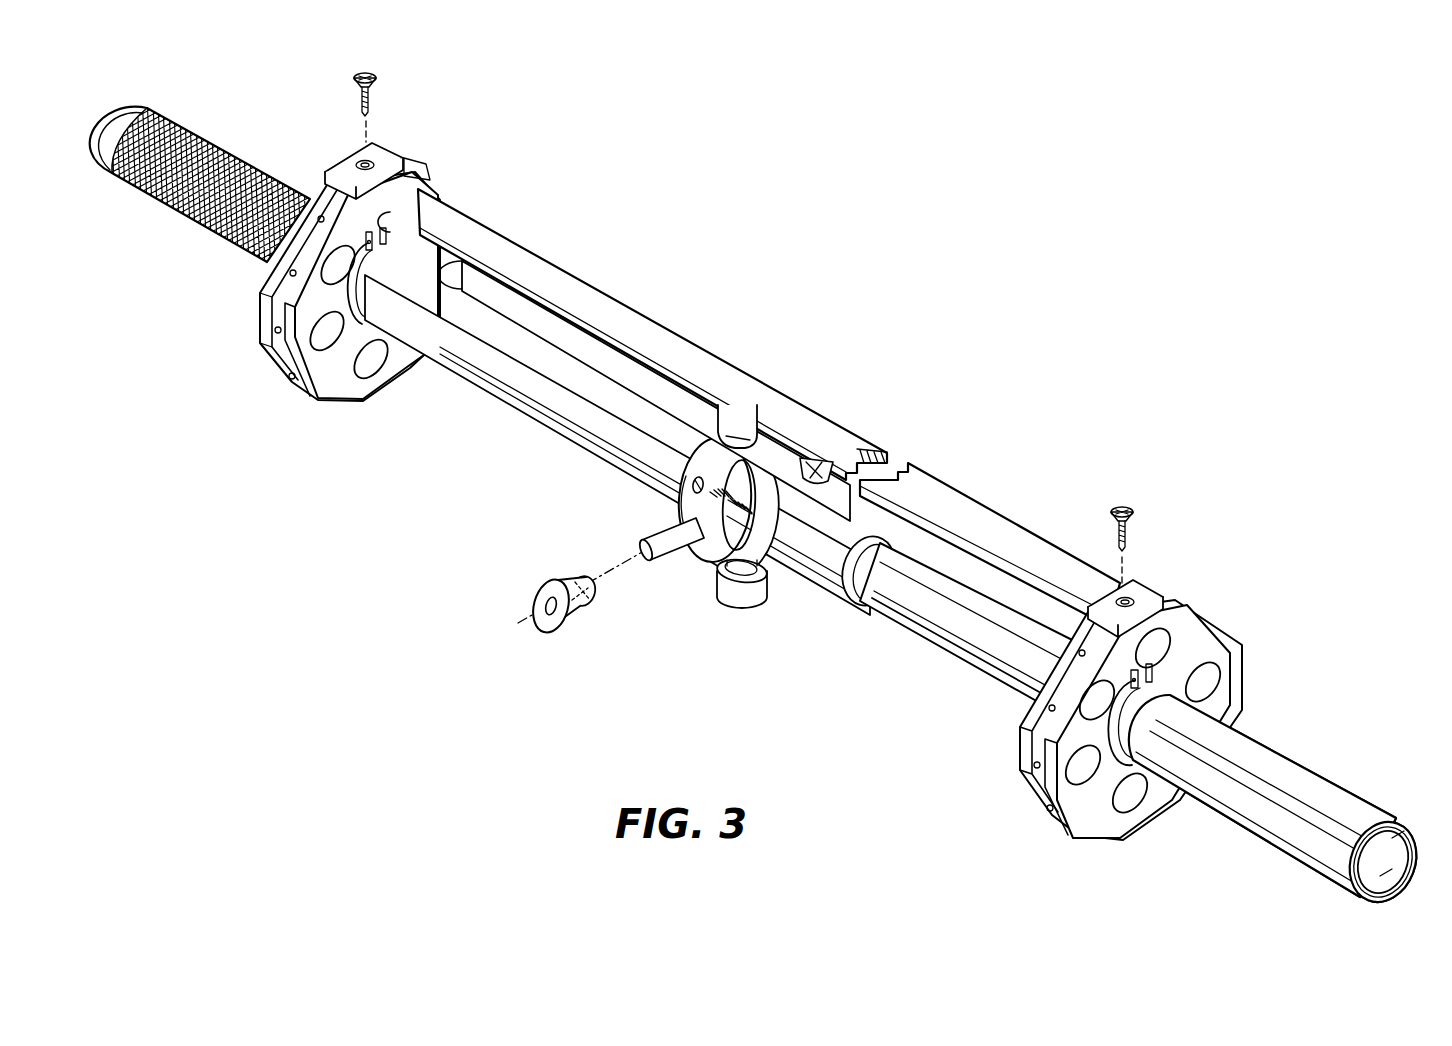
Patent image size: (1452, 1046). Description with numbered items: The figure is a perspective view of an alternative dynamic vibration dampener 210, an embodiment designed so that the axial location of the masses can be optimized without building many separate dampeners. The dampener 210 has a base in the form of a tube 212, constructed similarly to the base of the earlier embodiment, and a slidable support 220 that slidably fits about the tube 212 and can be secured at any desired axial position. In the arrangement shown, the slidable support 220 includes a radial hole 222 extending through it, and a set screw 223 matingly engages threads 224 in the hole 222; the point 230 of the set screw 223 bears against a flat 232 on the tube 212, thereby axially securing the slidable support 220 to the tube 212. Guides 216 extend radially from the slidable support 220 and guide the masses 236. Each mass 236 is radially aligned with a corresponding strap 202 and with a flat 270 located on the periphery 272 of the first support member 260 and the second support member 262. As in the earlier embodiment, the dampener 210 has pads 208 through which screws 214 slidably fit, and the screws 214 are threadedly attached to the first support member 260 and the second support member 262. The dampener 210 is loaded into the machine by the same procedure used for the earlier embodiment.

The strap 202 is at (563, 290).
The pad 208 is at (383, 160).
The dynamic vibration dampener 210 is at (950, 283).
The tube 212 is at (857, 605).
The screw 214 is at (357, 90).
The guide 216 is at (650, 534).
The slidable support 220 is at (681, 420).
The radial hole 222 is at (750, 505).
The set screw 223 is at (660, 485).
The threads 224 is at (725, 493).
The point 230 is at (717, 560).
The flat 232 is at (760, 495).
The mass 236 is at (575, 620).
The first support member 260 is at (1093, 820).
The second support member 262 is at (342, 385).
The flat 270 is at (288, 334).
The periphery 272 is at (255, 311).